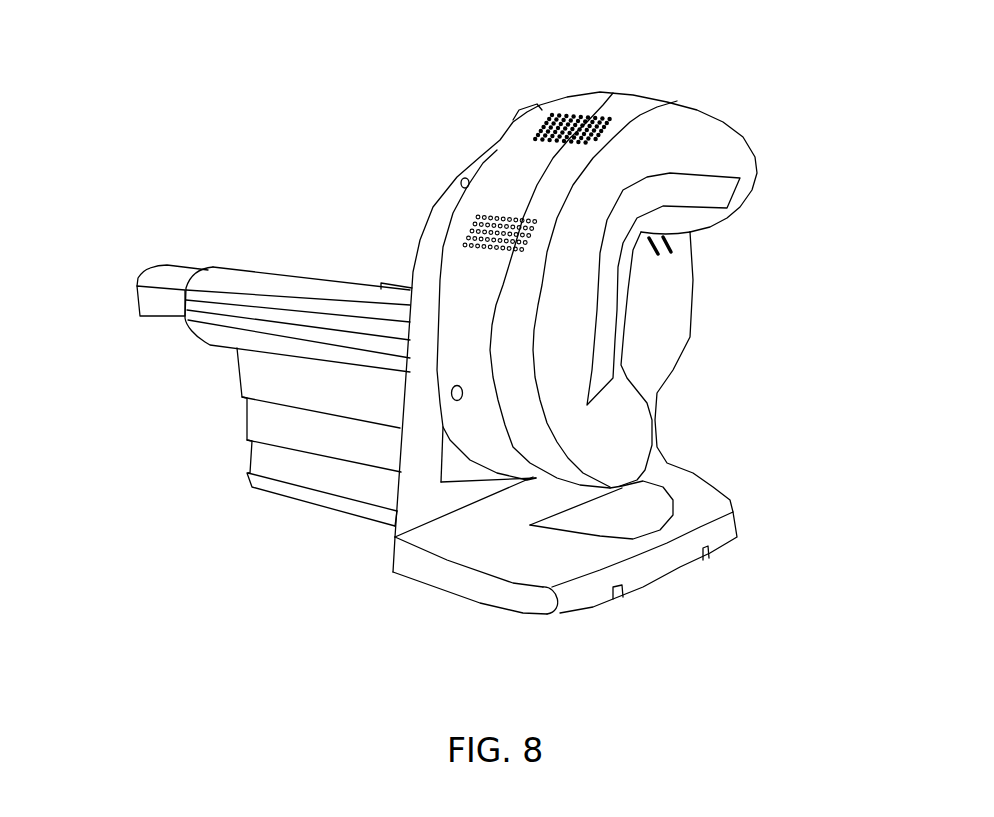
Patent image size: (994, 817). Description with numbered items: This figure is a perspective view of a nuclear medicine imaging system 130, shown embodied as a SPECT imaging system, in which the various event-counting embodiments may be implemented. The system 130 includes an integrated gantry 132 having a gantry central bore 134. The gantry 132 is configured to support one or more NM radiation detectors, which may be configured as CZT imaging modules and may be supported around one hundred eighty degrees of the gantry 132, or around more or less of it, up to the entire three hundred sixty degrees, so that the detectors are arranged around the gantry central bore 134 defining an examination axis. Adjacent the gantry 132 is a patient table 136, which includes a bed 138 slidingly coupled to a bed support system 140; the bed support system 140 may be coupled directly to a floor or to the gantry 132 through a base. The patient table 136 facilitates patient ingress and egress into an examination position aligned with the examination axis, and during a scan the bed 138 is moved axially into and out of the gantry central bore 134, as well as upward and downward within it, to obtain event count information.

The NM imaging system 130 is at (230, 632).
The integrated gantry 132 is at (696, 42).
The gantry central bore 134 is at (730, 306).
The patient table 136 is at (172, 200).
The bed 138 is at (310, 279).
The bed support system 140 is at (309, 503).